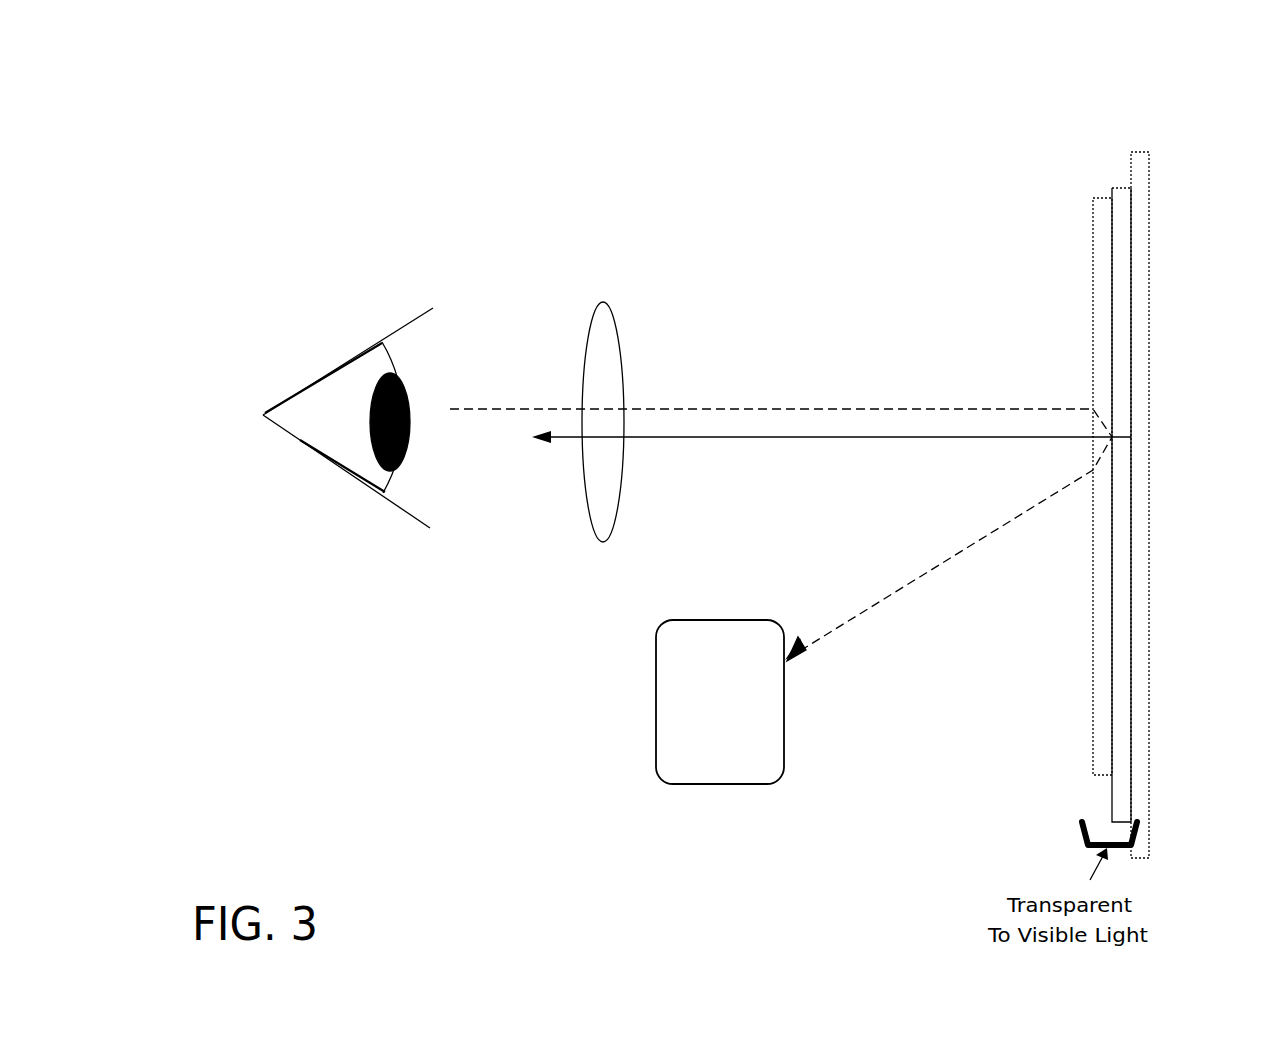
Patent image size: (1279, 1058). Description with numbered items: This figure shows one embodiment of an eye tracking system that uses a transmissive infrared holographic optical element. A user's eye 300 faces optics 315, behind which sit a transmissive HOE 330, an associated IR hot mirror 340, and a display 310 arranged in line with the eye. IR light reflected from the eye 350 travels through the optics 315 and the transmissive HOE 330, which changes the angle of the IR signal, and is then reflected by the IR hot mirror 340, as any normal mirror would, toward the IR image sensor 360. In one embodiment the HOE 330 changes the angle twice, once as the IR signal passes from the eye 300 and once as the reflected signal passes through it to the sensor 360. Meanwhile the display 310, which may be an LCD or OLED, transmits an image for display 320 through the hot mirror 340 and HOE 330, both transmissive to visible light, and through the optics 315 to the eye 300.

The user's eye 300 is at (348, 405).
The display 310 is at (1187, 505).
The optics 315 is at (592, 381).
The image for display 320 is at (831, 461).
The transmissive HOE 330 is at (1094, 254).
The IR hot mirror 340 is at (1121, 188).
The IR light reflected from the eye 350 is at (781, 502).
The IR image sensor 360 is at (720, 702).